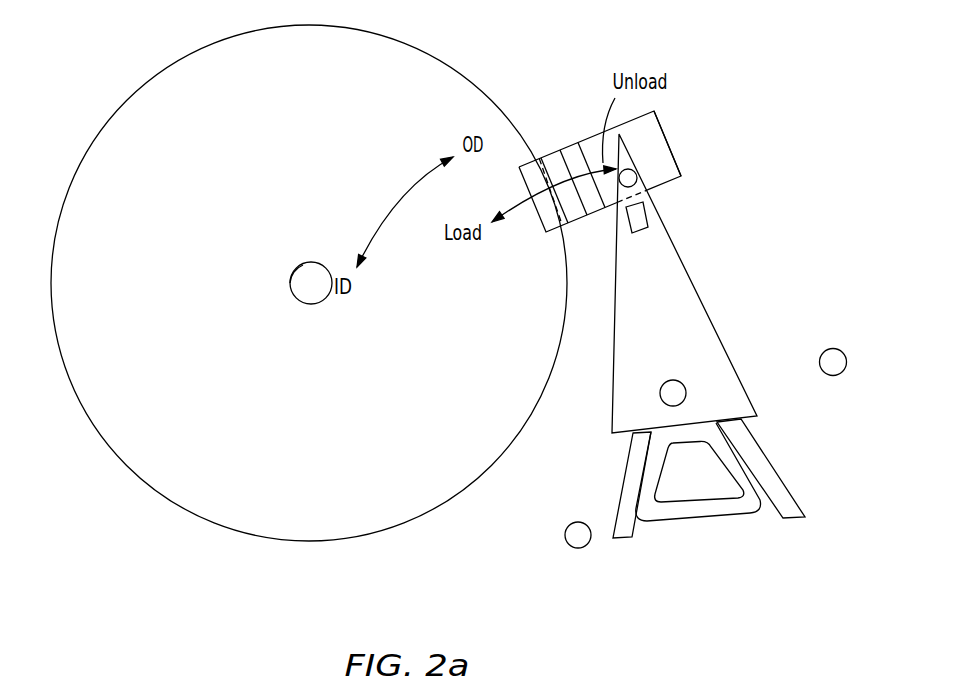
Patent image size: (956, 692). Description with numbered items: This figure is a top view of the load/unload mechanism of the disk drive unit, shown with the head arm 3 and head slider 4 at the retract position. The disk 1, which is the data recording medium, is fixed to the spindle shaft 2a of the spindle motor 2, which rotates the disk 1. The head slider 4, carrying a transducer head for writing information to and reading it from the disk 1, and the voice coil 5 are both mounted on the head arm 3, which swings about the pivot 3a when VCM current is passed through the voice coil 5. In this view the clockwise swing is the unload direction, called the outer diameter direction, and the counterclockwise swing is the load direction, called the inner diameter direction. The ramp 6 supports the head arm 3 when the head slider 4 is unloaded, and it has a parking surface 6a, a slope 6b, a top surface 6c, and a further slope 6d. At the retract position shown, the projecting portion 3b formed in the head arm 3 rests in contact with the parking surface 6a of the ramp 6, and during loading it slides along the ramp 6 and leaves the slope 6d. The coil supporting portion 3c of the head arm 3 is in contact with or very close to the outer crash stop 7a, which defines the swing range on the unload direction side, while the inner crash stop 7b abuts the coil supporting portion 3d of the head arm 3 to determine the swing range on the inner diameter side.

The disk 1 is at (152, 79).
The spindle motor 2 is at (305, 296).
The spindle shaft 2a is at (293, 267).
The head arm 3 is at (731, 376).
The pivot 3a is at (669, 380).
The projecting portion 3b is at (636, 179).
The coil supporting portion 3c is at (623, 534).
The coil supporting portion 3d is at (797, 518).
The head slider 4 is at (640, 228).
The voice coil 5 is at (700, 513).
The ramp 6 is at (682, 122).
The parking surface 6a is at (670, 163).
The slope 6b is at (572, 152).
The top surface 6c is at (553, 157).
The slope 6d is at (529, 168).
The outer crash stop 7a is at (568, 523).
The inner crash stop 7b is at (826, 350).